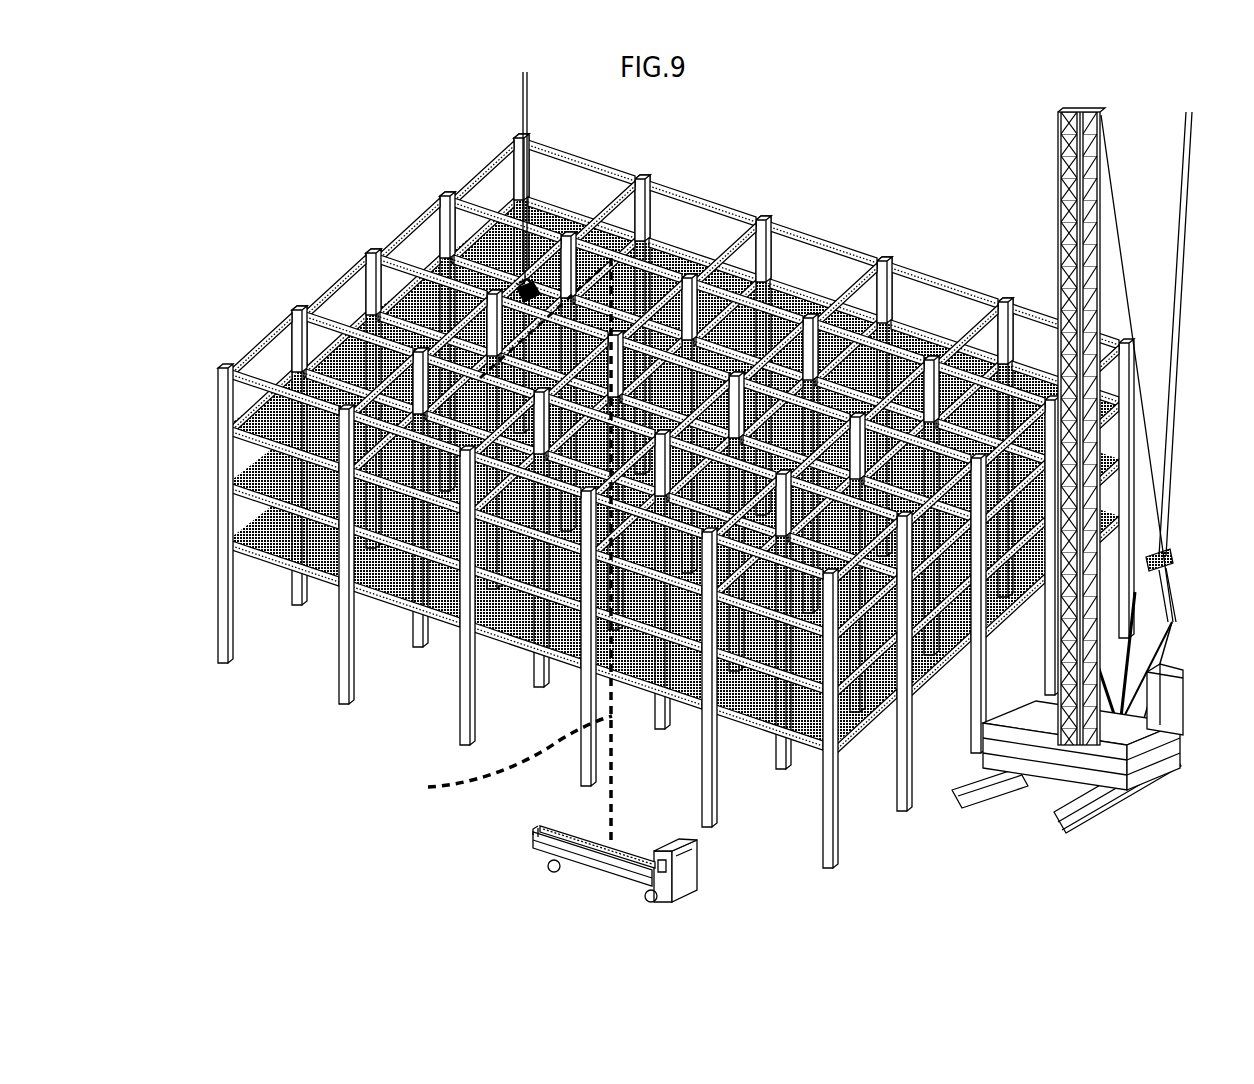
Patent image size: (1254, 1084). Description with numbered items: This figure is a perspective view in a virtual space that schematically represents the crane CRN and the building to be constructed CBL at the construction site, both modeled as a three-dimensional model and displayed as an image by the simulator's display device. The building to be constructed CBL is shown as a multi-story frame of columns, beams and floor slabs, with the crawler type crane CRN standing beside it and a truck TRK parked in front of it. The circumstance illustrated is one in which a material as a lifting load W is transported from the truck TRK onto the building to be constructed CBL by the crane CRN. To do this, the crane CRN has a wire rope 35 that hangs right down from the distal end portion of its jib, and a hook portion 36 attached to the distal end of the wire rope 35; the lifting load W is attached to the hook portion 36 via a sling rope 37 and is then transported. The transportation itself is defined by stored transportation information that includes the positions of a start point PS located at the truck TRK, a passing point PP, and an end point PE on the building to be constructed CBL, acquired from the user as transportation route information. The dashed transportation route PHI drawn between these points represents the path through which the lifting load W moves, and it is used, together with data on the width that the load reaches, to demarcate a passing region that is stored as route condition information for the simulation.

The building to be constructed CBL is at (247, 322).
The crane CRN is at (1022, 858).
The truck TRK is at (670, 906).
The start point PS is at (547, 866).
The passing point PP is at (643, 244).
The transportation route PHI is at (497, 757).
The end point PE is at (467, 370).
The lifting load W is at (525, 276).
The wire rope 35 is at (531, 94).
The hook portion 36 is at (528, 272).
The sling rope 37 is at (521, 293).